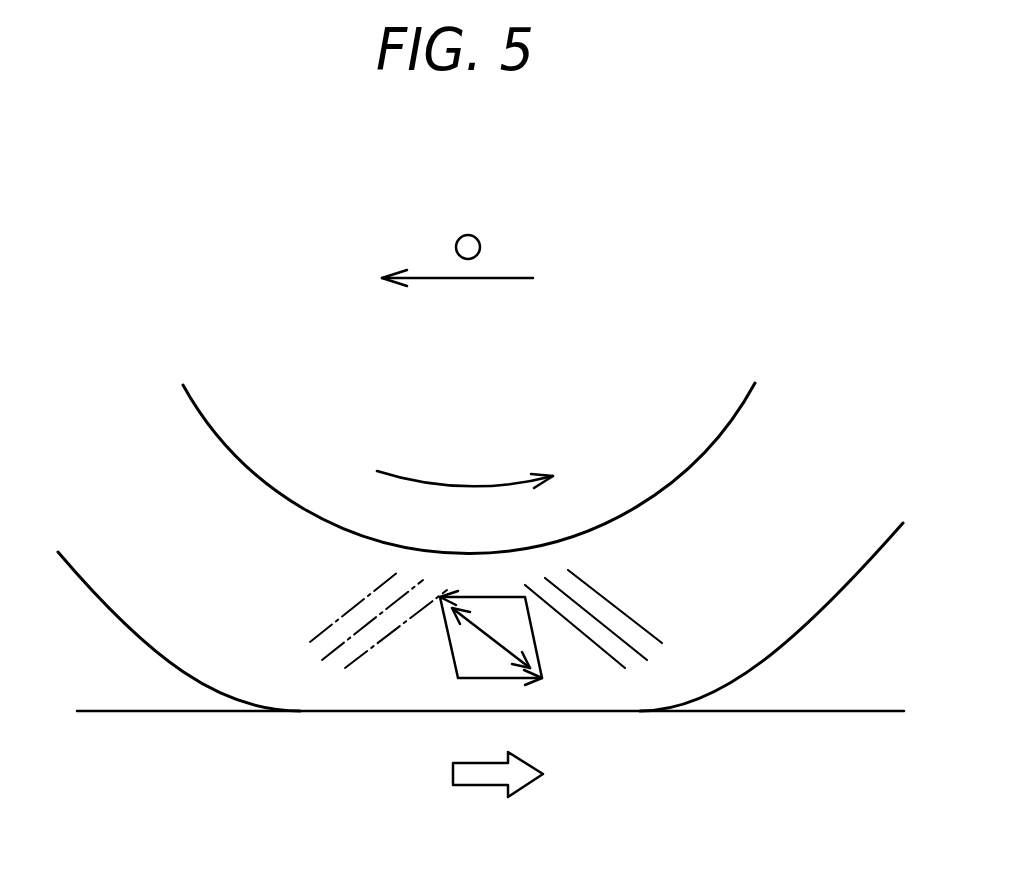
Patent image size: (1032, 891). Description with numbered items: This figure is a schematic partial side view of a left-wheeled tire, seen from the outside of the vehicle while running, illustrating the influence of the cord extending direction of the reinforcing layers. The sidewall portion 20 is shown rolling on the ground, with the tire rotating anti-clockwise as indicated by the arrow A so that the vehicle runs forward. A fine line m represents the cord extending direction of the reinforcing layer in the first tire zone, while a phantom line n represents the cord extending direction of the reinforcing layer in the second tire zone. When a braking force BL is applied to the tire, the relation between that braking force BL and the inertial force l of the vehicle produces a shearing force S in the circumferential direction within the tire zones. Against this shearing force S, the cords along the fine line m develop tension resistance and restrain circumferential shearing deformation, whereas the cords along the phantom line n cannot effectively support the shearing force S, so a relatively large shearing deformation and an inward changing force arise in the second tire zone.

The sidewall portion 20 is at (219, 633).
The inertial force l is at (467, 280).
The rotation direction arrow A is at (476, 487).
The shearing force S is at (478, 597).
The phantom line n is at (350, 608).
The fine line m is at (613, 603).
The braking force BL is at (522, 774).